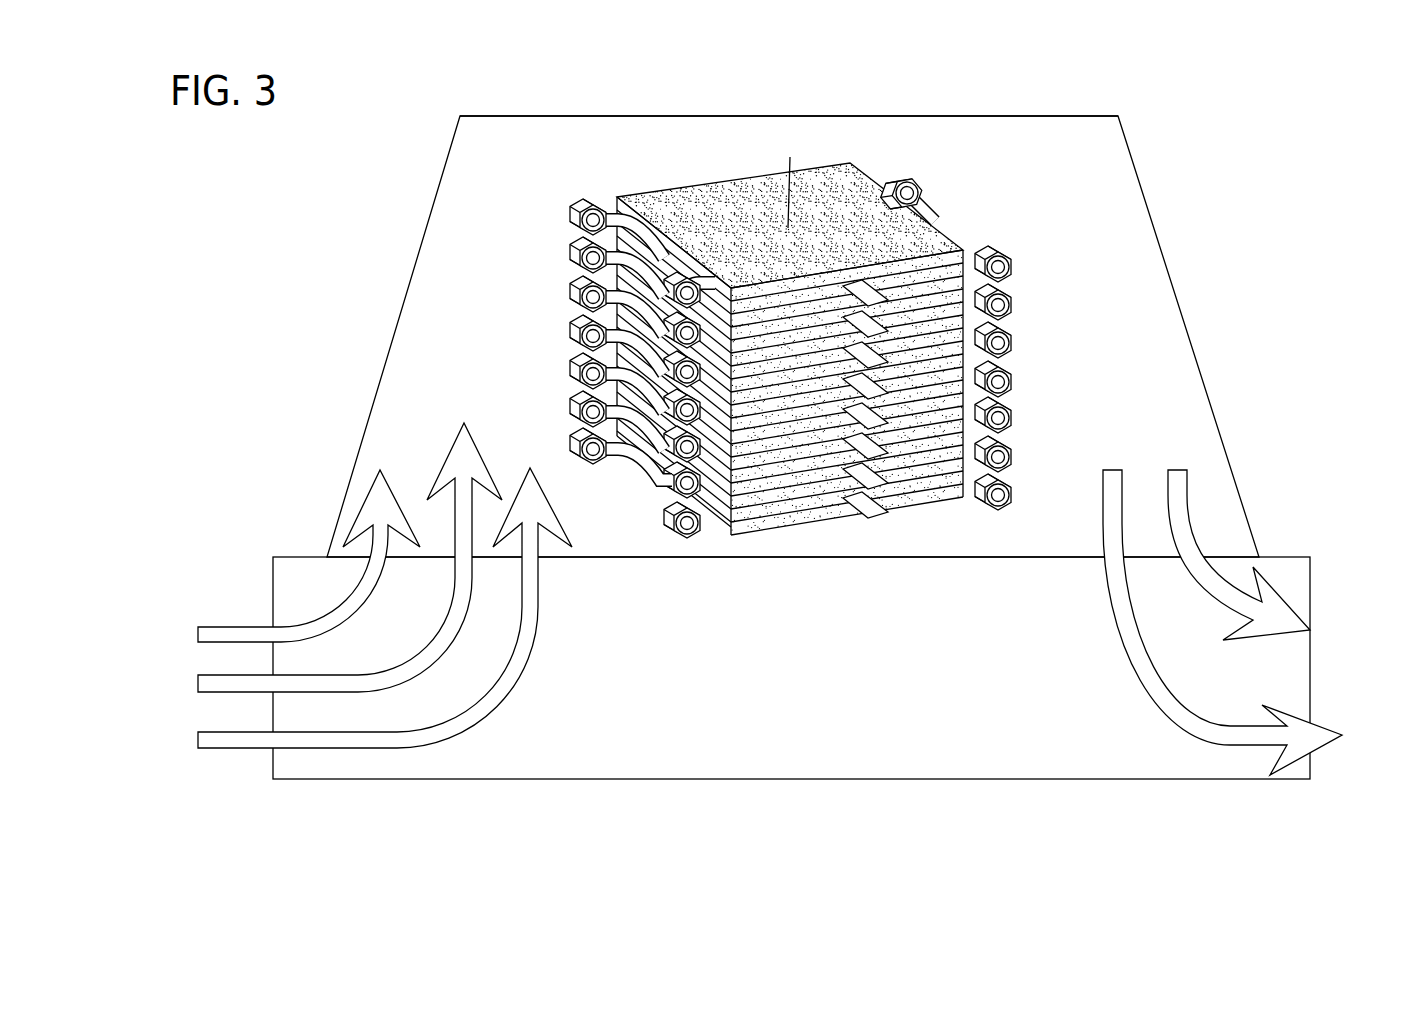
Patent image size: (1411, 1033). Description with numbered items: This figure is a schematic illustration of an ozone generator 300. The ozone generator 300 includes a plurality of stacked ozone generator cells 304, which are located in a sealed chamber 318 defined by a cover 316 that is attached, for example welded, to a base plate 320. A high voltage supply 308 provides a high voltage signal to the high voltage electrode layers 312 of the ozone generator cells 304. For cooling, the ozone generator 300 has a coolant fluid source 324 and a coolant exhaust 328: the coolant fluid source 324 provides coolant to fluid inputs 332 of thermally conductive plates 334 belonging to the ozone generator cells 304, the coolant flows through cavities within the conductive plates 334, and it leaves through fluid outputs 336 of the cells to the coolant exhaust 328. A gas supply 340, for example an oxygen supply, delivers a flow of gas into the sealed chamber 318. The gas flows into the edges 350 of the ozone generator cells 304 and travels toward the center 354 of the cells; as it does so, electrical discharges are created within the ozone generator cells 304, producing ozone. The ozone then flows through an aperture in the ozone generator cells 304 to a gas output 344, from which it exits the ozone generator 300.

The ozone generator 300 is at (201, 254).
The ozone generator cells 304 is at (861, 147).
The high voltage supply 308 is at (199, 683).
The high voltage electrode layers 312 is at (878, 500).
The cover 316 is at (1043, 115).
The sealed chamber 318 is at (508, 148).
The base plate 320 is at (811, 680).
The coolant fluid source 324 is at (199, 634).
The coolant exhaust 328 is at (1177, 468).
The fluid inputs 332 is at (904, 176).
The thermally conductive plates 334 is at (705, 215).
The fluid outputs 336 is at (1014, 266).
The gas supply 340 is at (199, 740).
The gas output 344 is at (1112, 468).
The edges 350 is at (798, 480).
The center 354 is at (793, 181).